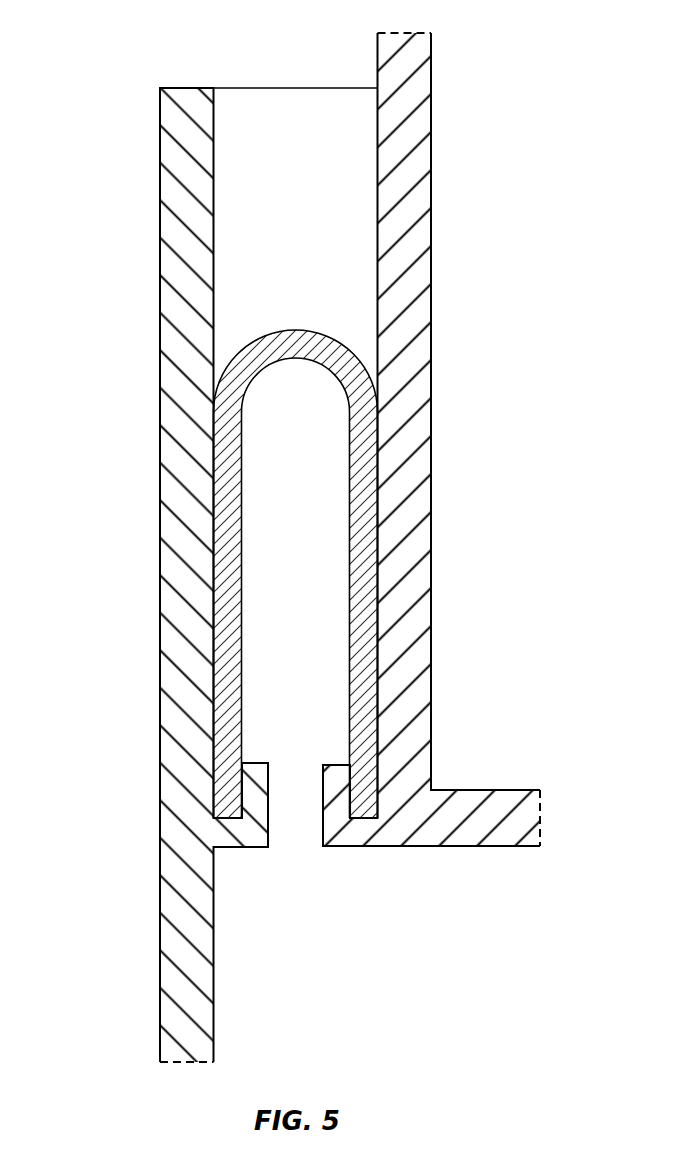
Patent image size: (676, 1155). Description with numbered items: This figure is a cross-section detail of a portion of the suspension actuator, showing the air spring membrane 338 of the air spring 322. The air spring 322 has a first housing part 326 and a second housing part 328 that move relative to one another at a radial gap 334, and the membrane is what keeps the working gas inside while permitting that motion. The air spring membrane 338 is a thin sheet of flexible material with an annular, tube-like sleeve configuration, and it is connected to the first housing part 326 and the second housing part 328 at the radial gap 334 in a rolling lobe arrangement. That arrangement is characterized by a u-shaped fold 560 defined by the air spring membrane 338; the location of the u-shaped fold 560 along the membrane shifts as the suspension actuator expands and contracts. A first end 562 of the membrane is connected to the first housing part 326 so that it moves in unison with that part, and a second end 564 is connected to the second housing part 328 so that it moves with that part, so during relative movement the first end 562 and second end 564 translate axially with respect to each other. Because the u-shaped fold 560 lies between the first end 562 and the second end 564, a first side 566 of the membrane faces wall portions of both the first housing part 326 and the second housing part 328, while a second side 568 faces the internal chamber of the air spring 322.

The air spring 322 is at (133, 364).
The first housing part 326 is at (434, 110).
The second housing part 328 is at (159, 179).
The radial gap 334 is at (281, 66).
The air spring membrane 338 is at (212, 516).
The u-shaped fold 560 is at (278, 345).
The first end 562 is at (362, 784).
The second end 564 is at (232, 793).
The first side 566 is at (338, 342).
The second side 568 is at (293, 359).